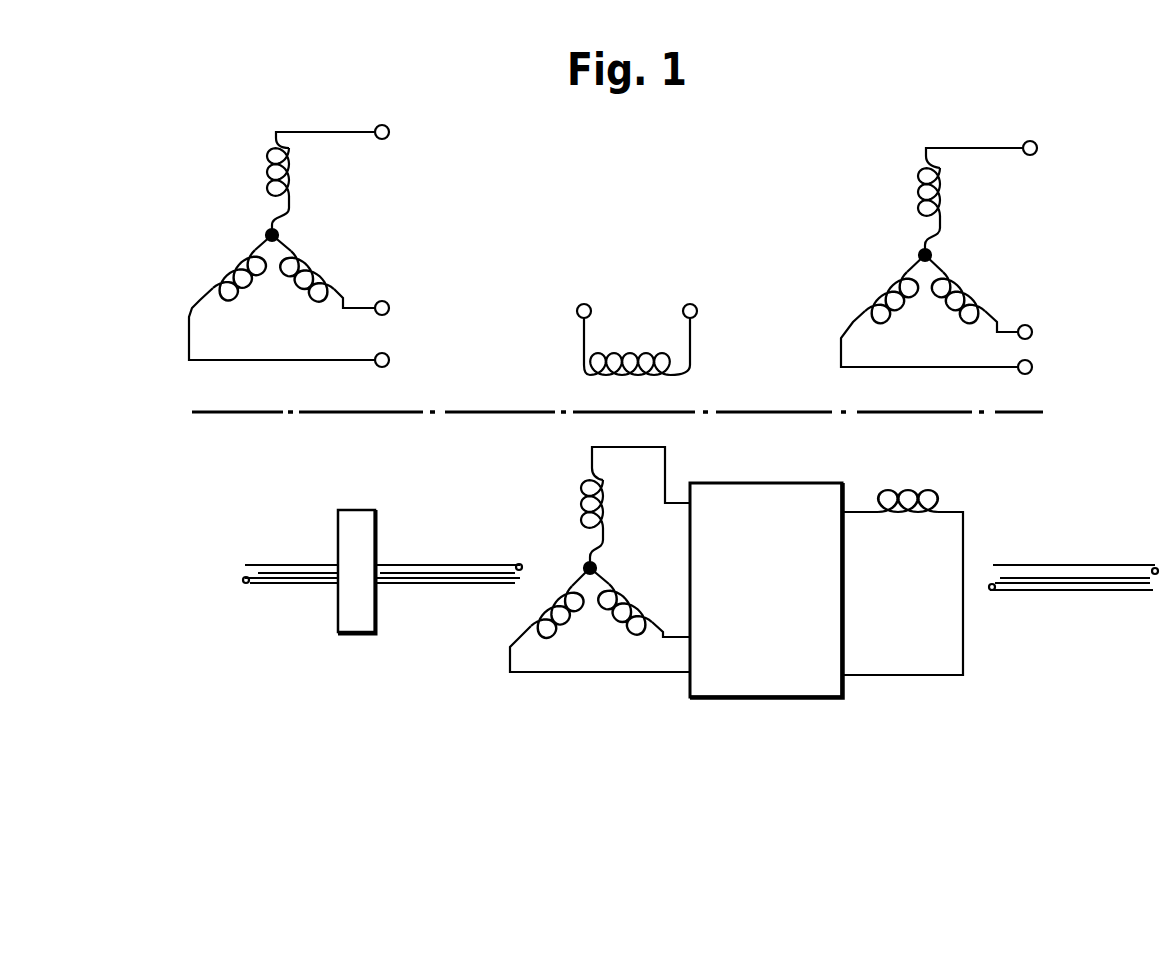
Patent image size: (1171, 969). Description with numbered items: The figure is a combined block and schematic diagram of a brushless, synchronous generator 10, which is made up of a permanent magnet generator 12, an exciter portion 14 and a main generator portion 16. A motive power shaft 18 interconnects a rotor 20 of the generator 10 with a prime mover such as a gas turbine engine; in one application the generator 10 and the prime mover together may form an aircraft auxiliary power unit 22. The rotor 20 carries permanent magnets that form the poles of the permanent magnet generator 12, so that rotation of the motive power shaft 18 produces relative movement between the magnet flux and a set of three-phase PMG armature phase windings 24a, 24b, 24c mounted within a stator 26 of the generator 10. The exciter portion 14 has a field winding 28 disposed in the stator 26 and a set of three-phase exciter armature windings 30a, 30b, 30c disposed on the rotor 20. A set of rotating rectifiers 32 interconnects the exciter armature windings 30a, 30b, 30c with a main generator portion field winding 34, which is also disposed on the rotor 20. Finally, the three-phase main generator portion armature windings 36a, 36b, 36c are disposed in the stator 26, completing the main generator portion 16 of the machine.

The brushless synchronous generator 10 is at (1052, 385).
The permanent magnet generator 12 is at (271, 246).
The exciter portion 14 is at (601, 312).
The main generator portion 16 is at (908, 257).
The motive power shaft 18 is at (298, 587).
The rotor 20 is at (552, 593).
The aircraft auxiliary power unit 22 is at (357, 510).
The PMG phase winding 24a is at (265, 178).
The PMG phase winding 24b is at (333, 272).
The PMG phase winding 24c is at (223, 262).
The stator 26 is at (266, 257).
The exciter field winding 28 is at (612, 375).
The exciter armature winding 30a is at (580, 490).
The exciter armature winding 30b is at (640, 593).
The exciter armature winding 30c is at (507, 610).
The rotating rectifiers 32 is at (768, 698).
The main generator portion field winding 34 is at (897, 502).
The main generator portion armature winding 36a is at (912, 198).
The main generator portion armature winding 36b is at (975, 282).
The main generator portion armature winding 36c is at (878, 273).